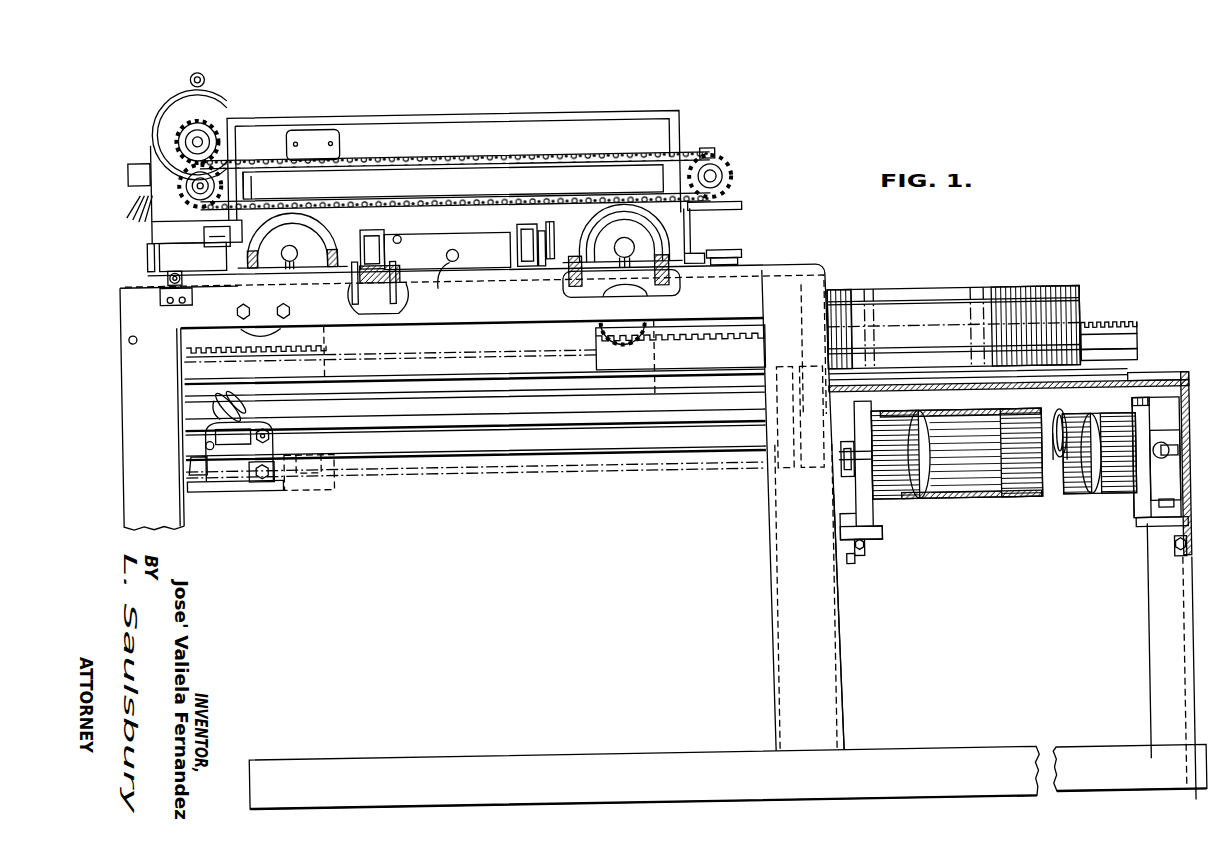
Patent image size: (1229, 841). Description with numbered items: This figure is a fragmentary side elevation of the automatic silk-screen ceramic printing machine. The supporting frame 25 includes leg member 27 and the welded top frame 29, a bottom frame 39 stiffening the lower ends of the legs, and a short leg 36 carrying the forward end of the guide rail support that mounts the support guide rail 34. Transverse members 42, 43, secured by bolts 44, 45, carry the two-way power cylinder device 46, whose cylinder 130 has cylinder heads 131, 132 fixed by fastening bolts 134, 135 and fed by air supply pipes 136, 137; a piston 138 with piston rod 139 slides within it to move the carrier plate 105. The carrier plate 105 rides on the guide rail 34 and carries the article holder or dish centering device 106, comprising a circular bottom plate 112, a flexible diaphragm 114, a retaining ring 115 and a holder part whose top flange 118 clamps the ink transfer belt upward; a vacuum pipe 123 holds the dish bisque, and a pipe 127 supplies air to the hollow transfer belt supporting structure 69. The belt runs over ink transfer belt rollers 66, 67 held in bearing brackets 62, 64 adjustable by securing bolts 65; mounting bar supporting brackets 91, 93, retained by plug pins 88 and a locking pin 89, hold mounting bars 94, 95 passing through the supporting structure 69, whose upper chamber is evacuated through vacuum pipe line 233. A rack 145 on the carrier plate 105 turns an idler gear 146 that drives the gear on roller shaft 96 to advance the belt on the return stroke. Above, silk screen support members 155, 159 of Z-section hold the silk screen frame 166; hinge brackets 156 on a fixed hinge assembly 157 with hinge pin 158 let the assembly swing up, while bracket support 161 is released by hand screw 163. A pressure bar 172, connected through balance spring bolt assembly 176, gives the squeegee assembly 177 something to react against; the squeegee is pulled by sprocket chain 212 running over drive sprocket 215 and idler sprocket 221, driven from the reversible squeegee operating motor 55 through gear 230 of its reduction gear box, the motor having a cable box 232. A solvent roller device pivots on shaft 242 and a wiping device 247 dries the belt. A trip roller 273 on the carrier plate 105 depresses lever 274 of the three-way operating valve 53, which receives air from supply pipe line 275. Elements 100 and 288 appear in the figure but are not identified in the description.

The frame 25 is at (843, 640).
The leg member 27 is at (182, 503).
The top frame 29 is at (777, 272).
The support guide rail 34 is at (214, 396).
The short leg 36 is at (1165, 656).
The bottom frame 39 is at (692, 756).
The transverse member 42 is at (863, 545).
The transverse member 43 is at (1140, 538).
The bolt 44 is at (850, 568).
The bolt 45 is at (1193, 555).
The power cylinder device 46 is at (986, 508).
The operating valve 53 is at (266, 441).
The squeegee operating motor 55 is at (232, 119).
The roller bearing bracket 62 is at (322, 233).
The bearing bracket 64 is at (585, 246).
The securing bolt 65 is at (640, 282).
The ink transfer belt roller 66 is at (292, 208).
The ink transfer belt roller 67 is at (608, 212).
The transfer belt supporting structure 69 is at (487, 236).
The plug pin 88 is at (350, 262).
The locking pin 89 is at (398, 306).
The mounting bar supporting bracket 91 is at (386, 230).
The mounting bar supporting bracket 93 is at (529, 228).
The mounting bar 94 is at (384, 244).
The mounting bar 95 is at (522, 251).
The roller shaft 96 is at (289, 258).
The hub 100 is at (638, 252).
The carrier plate 105 is at (1137, 386).
The dish centering device 106 is at (318, 352).
The circular bottom plate 112 is at (1132, 365).
The flexible diaphragm 114 is at (594, 352).
The retaining ring 115 is at (1081, 315).
The top flange 118 is at (888, 291).
The vacuum pipe 123 is at (1095, 331).
The pipe 127 is at (443, 286).
The cylinder 130 is at (946, 507).
The cylinder head 131 is at (871, 420).
The cylinder head 132 is at (1148, 432).
The fastening bolt 134 is at (846, 510).
The fastening bolt 135 is at (1185, 508).
The air supply pipe 136 is at (838, 482).
The air supply pipe 137 is at (1158, 471).
The piston 138 is at (1110, 500).
The piston rod 139 is at (1058, 500).
The rack 145 is at (656, 358).
The idler gear 146 is at (645, 332).
The silk screen support member 155 is at (252, 172).
The hinge bracket 156 is at (212, 238).
The fixed hinge assembly 157 is at (168, 303).
The hinge pin 158 is at (181, 266).
The silk screen transverse support member 159 is at (741, 206).
The bracket support 161 is at (694, 238).
The hand screw 163 is at (728, 255).
The silk screen frame 166 is at (470, 176).
The pressure bar 172 is at (476, 116).
The balance spring bolt assembly 176 is at (703, 150).
The squeegee assembly 177 is at (347, 165).
The sprocket chain 212 is at (570, 166).
The drive sprocket 215 is at (185, 186).
The idler sprocket 221 is at (710, 160).
The gear 230 is at (195, 145).
The cable box 232 is at (132, 168).
The vacuum pipe line 233 is at (406, 236).
The shaft 242 is at (129, 334).
The wiping device 247 is at (152, 278).
The trip roller 273 is at (228, 393).
The lever 274 is at (255, 430).
The supply pipe line 275 is at (188, 468).
The brush wires 288 is at (131, 208).